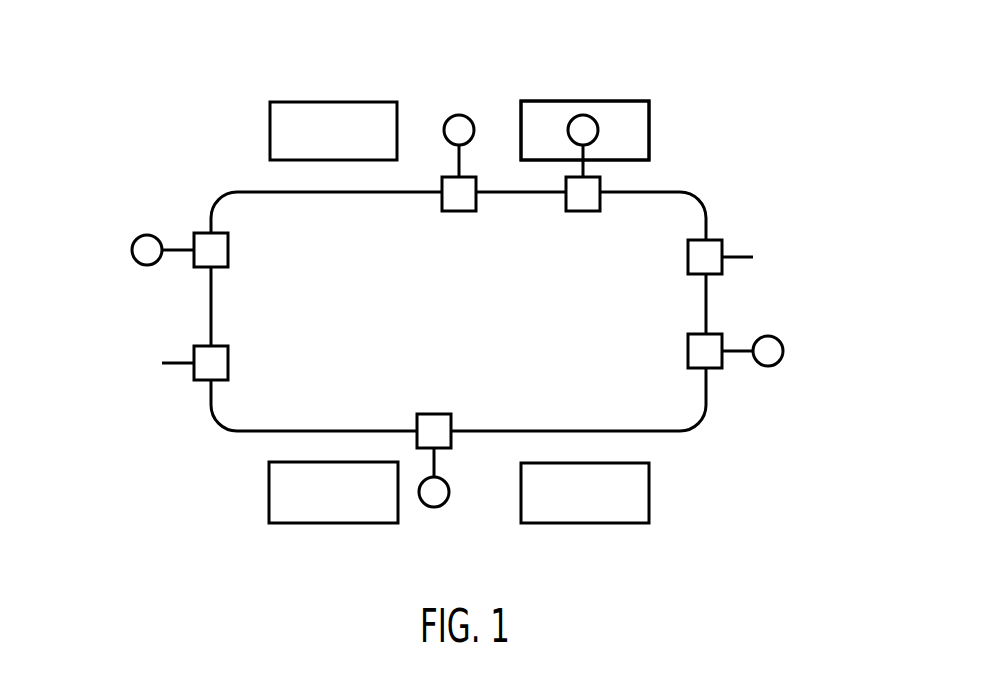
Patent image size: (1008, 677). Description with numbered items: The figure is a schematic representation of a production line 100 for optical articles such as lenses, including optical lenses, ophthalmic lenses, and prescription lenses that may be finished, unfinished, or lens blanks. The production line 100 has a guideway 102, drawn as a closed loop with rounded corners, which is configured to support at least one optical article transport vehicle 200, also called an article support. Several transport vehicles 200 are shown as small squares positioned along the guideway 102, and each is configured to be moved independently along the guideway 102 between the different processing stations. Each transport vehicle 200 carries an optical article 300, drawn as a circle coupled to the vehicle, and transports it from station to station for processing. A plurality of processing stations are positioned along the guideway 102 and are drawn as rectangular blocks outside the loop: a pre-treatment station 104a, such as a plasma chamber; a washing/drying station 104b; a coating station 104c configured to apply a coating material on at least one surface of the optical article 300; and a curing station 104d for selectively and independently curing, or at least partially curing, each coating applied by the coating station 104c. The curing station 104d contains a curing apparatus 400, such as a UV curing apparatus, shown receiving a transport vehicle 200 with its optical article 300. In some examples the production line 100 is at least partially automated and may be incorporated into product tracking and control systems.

The production line 100 is at (812, 152).
The guideway 102 is at (694, 194).
The pre-treatment station 104a is at (325, 120).
The washing/drying station 104b is at (283, 496).
The coating station 104c is at (633, 496).
The curing station 104d is at (635, 127).
The optical article transport vehicle 200 is at (460, 212).
The optical article 300 is at (459, 115).
The curing apparatus 400 is at (553, 100).